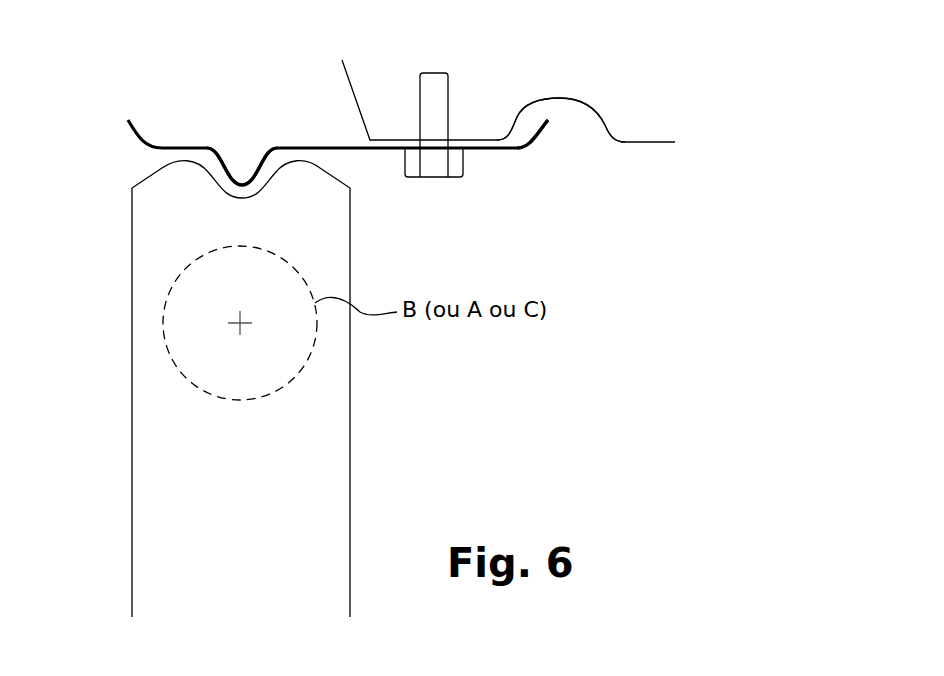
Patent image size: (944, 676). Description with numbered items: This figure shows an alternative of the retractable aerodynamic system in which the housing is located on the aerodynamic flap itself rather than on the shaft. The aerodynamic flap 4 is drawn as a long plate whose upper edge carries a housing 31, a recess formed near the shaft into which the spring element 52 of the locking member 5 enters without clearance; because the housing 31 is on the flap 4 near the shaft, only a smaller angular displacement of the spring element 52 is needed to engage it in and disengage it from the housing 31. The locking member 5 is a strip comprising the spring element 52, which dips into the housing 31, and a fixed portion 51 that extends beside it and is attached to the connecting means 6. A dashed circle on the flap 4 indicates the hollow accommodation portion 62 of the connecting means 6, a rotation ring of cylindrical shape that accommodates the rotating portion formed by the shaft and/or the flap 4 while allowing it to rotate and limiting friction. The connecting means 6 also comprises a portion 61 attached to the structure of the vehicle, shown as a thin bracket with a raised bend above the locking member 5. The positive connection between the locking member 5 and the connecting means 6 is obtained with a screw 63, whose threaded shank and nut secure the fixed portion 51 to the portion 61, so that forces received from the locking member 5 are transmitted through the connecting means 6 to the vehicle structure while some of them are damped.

The aerodynamic flap 4 is at (354, 496).
The housing 31 is at (208, 202).
The hollow accommodation portion 62 is at (300, 383).
The locking member 5 is at (388, 195).
The spring element 52 is at (261, 127).
The fixed portion 51 is at (512, 153).
The connecting means 6 is at (588, 70).
The portion attached to the structure 61 is at (519, 112).
The screw 63 is at (448, 93).